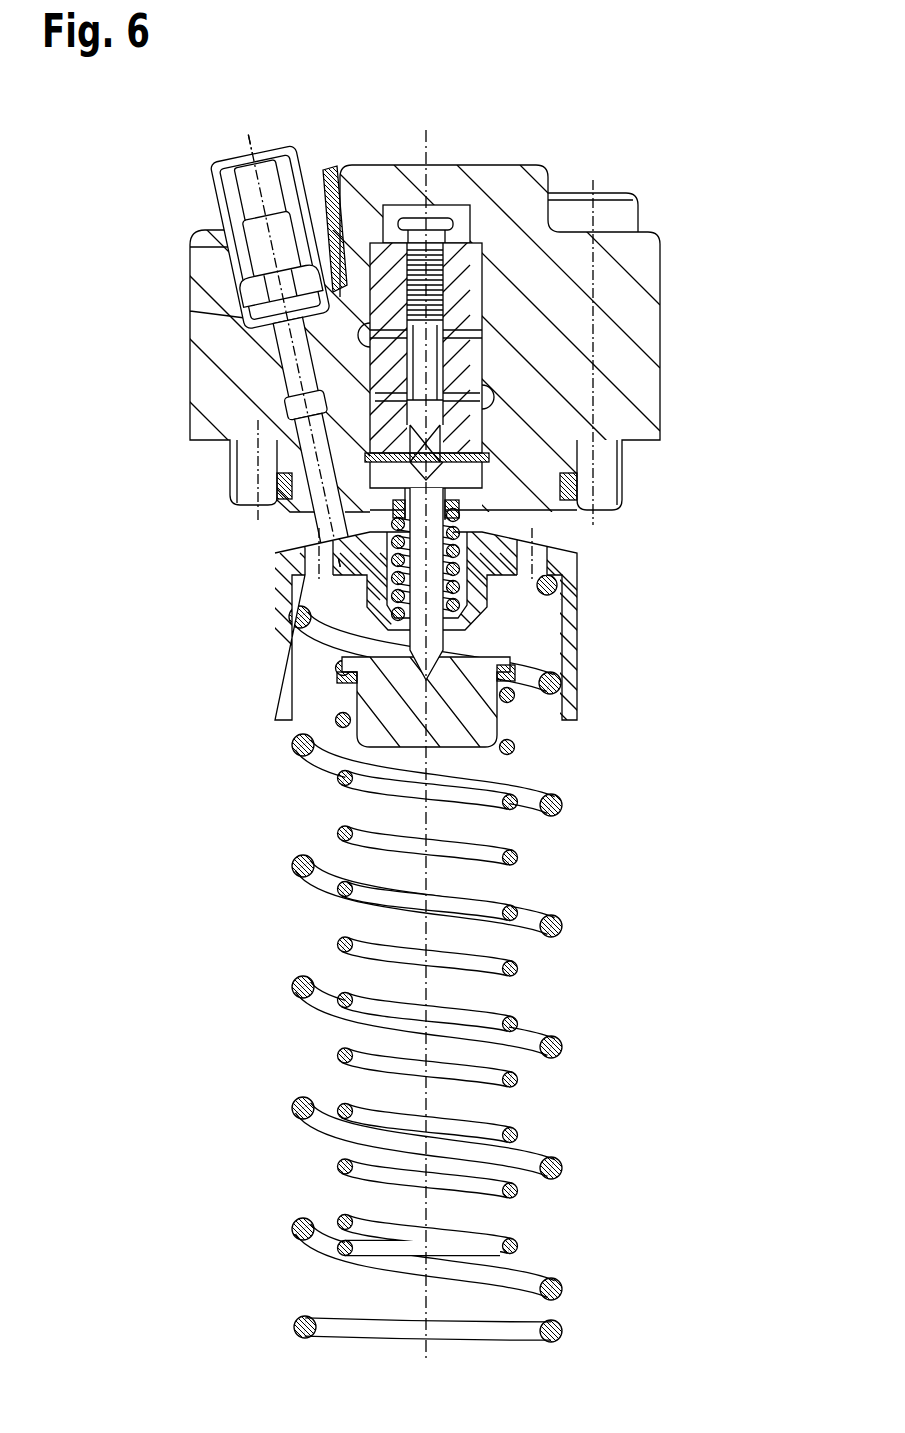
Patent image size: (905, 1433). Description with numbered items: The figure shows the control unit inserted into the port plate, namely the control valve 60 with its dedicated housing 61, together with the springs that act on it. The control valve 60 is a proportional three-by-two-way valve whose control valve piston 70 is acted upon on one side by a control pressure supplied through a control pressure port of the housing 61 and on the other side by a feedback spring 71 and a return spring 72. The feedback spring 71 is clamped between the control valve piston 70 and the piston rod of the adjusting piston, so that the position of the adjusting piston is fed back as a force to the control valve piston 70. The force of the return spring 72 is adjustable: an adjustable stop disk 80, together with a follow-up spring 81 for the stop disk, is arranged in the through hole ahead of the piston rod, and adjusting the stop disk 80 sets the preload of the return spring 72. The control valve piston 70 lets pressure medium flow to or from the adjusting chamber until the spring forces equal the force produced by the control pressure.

The control valve 60 is at (690, 152).
The housing 61 is at (497, 185).
The control valve piston 70 is at (430, 363).
The feedback spring 71 is at (515, 966).
The return spring 72 is at (468, 522).
The adjustable stop disk 80 is at (578, 648).
The follow-up spring 81 is at (557, 797).